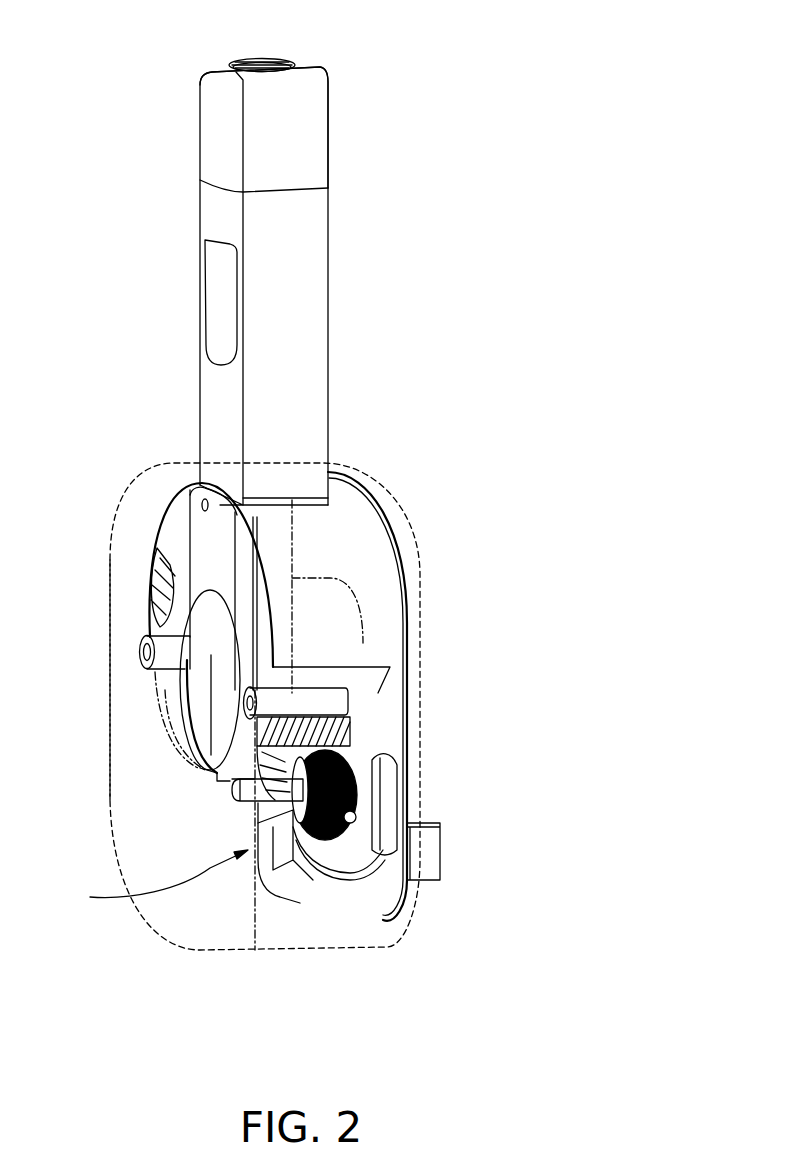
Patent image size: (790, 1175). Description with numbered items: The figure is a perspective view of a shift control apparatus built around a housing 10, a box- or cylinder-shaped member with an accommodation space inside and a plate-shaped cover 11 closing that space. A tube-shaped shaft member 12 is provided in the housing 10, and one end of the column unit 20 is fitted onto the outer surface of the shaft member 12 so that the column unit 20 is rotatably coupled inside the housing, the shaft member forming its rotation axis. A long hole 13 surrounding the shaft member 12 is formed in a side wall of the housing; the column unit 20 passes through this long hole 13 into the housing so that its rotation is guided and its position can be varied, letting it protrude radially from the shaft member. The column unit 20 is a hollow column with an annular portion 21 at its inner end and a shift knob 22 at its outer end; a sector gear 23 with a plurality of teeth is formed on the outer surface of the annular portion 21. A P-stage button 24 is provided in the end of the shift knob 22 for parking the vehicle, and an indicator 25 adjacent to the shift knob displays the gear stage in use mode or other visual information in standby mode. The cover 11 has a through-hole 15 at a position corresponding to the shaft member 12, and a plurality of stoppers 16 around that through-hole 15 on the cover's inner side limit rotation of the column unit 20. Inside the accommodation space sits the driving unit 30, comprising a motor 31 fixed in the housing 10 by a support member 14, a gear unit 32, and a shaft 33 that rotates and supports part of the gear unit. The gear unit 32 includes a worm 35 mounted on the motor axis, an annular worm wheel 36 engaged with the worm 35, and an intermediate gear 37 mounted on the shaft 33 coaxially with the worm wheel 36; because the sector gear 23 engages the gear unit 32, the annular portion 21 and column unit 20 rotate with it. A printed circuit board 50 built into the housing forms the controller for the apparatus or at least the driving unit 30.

The housing 10 is at (400, 502).
The cover 11 is at (110, 733).
The shaft member 12 is at (330, 577).
The long hole 13 is at (283, 527).
The support member 14 is at (388, 767).
The through-hole 15 is at (153, 700).
The stoppers 16 is at (139, 652).
The column unit 20 is at (320, 237).
The annular portion 21 is at (207, 773).
The shift knob 22 is at (317, 123).
The sector gear 23 is at (350, 718).
The P-stage button 24 is at (265, 59).
The indicator 25 is at (218, 283).
The driving unit 30 is at (154, 883).
The motor 31 is at (280, 860).
The gear unit 32 is at (342, 877).
The shaft 33 is at (233, 801).
The worm 35 is at (335, 905).
The worm wheel 36 is at (359, 872).
The intermediate gear 37 is at (283, 895).
The printed circuit board 50 is at (410, 803).